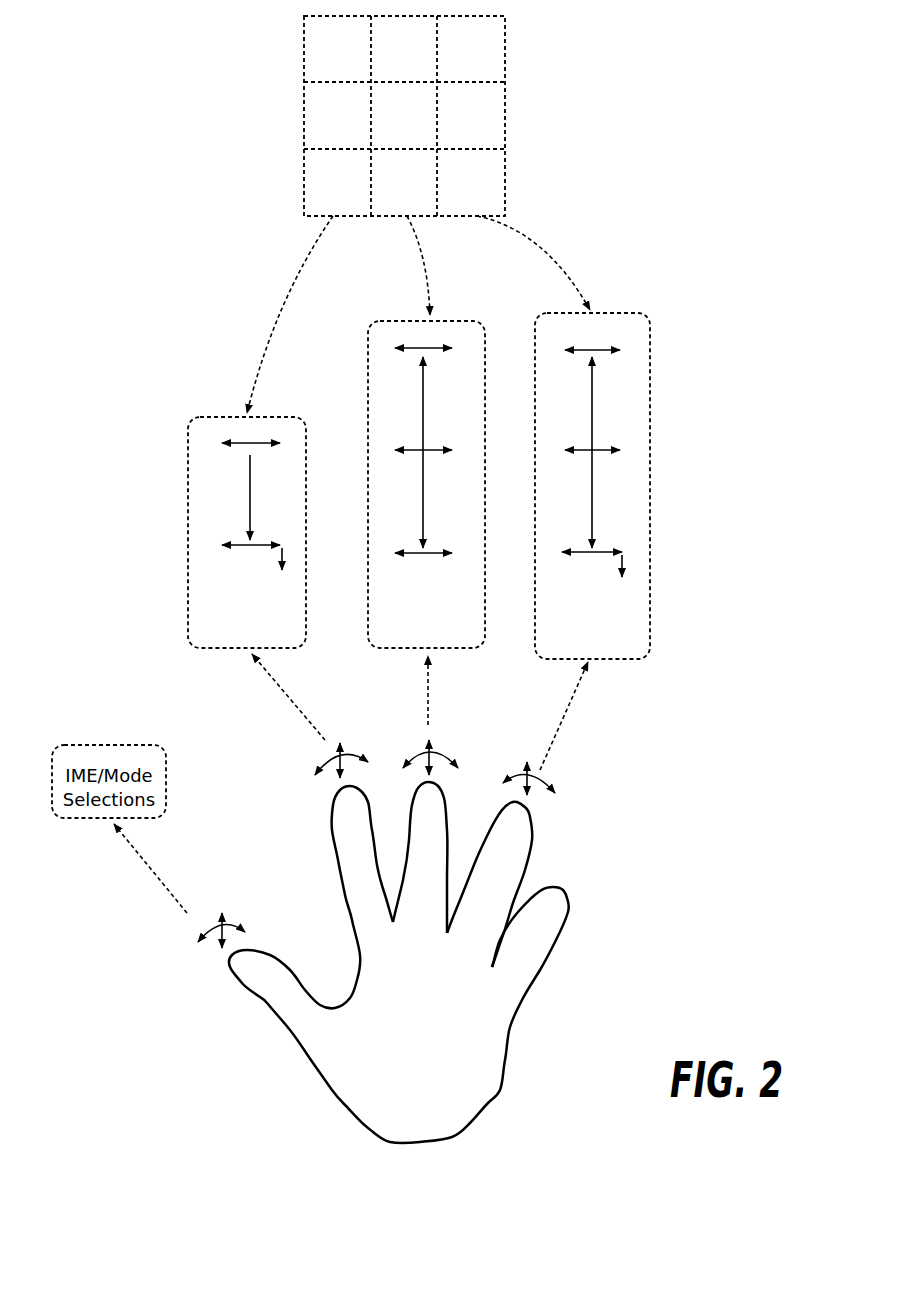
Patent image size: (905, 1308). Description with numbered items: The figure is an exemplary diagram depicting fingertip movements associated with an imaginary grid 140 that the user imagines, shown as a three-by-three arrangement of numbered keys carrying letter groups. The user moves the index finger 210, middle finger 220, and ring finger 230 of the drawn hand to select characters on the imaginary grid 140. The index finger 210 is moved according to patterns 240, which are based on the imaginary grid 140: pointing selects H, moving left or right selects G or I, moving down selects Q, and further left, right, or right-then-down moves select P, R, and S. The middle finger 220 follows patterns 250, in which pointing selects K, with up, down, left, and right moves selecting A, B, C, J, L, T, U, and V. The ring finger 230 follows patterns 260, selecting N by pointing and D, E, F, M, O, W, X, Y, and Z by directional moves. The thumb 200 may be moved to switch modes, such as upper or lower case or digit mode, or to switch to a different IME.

The imaginary grid 140 is at (319, 109).
The thumb 200 is at (255, 995).
The index finger 210 is at (333, 840).
The middle finger 220 is at (412, 795).
The ring finger 230 is at (497, 822).
The patterns 240 is at (189, 530).
The patterns 250 is at (370, 400).
The patterns 260 is at (650, 485).